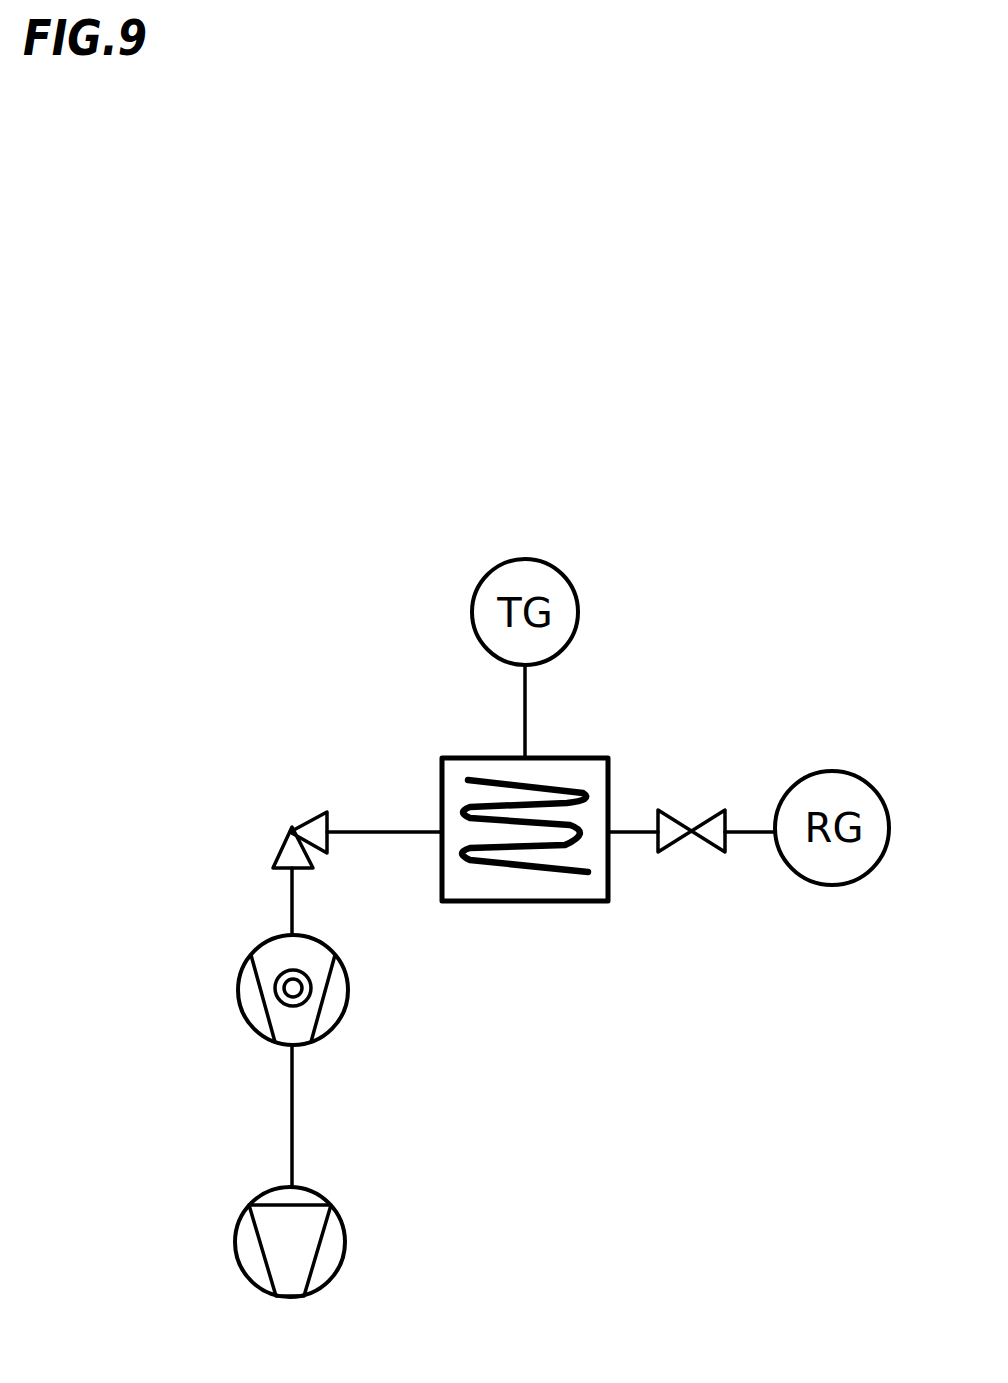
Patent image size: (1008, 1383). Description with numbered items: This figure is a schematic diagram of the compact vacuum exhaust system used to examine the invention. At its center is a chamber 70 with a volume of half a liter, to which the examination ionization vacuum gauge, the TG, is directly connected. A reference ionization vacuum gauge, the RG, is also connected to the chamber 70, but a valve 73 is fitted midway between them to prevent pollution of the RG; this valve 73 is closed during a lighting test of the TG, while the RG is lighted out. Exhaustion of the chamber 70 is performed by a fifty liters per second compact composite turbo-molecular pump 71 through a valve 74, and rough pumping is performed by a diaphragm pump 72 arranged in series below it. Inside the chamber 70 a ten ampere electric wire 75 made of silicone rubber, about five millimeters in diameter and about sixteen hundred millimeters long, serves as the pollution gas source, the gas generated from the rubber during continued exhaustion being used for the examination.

The chamber 70 is at (540, 901).
The compact composite turbo-molecular pump 71 is at (353, 973).
The diaphragm pump 72 is at (350, 1240).
The valve 73 is at (700, 850).
The valve 74 is at (287, 810).
The electric wire 75 is at (562, 782).